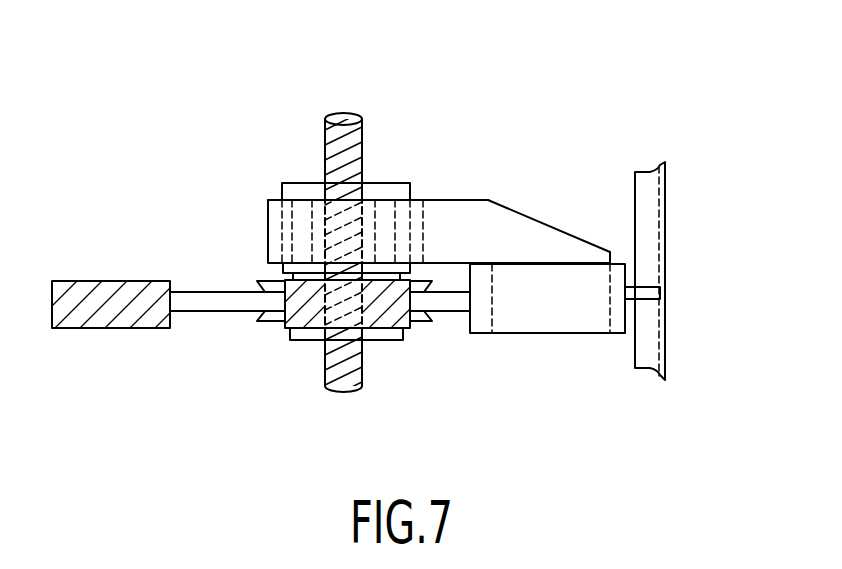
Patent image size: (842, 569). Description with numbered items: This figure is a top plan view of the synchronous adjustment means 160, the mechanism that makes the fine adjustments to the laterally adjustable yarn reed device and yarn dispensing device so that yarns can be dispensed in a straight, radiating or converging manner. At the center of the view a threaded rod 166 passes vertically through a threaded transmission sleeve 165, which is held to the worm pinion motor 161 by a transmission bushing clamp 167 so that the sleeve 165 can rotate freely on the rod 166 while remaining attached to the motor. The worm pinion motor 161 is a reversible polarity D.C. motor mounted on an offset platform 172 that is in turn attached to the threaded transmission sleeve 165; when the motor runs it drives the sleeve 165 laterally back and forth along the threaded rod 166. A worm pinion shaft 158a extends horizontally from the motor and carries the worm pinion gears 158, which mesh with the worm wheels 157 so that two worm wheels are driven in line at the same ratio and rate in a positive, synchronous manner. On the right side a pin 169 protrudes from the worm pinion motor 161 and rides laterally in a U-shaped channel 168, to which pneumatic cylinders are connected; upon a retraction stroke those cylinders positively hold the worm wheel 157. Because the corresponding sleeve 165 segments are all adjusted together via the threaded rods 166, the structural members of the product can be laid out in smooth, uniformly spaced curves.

The synchronous adjustment means 160 is at (603, 60).
The worm pinion motor 161 is at (545, 334).
The threaded transmission sleeve 165 is at (418, 188).
The threaded rod 166 is at (323, 128).
The transmission bushing clamp 167 is at (433, 207).
The U-shaped channel 168 is at (666, 198).
The pin 169 is at (632, 287).
The offset platform 172 is at (488, 200).
The worm wheel 157 is at (253, 322).
The worm pinion gear 158 is at (118, 282).
The worm pinion shaft 158a is at (183, 292).